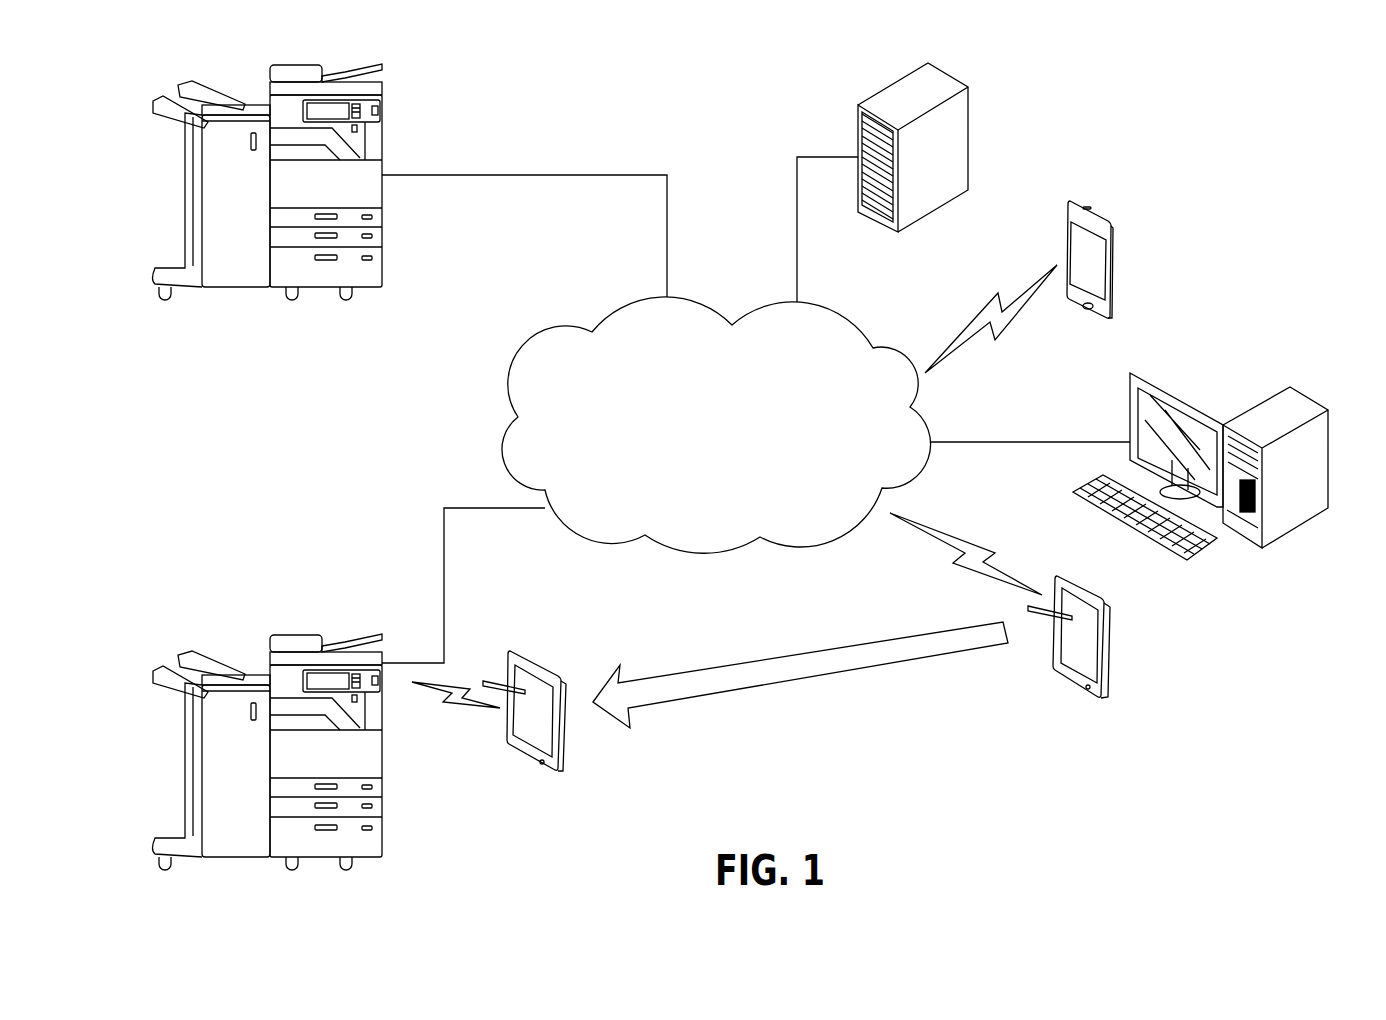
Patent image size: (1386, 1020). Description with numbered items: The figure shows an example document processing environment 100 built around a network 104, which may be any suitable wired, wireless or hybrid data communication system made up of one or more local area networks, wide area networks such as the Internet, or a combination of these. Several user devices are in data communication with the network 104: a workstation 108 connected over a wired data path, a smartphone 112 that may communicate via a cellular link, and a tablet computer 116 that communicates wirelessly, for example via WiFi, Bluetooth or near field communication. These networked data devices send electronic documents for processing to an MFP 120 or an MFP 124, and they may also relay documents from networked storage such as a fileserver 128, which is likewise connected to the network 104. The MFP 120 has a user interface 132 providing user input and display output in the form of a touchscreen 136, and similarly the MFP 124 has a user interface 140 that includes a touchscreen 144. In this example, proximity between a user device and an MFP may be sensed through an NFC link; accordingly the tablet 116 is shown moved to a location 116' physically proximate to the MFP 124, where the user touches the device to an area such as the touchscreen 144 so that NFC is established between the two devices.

The document processing environment 100 is at (1205, 160).
The network 104 is at (912, 405).
The workstation 108 is at (1328, 430).
The smartphone 112 is at (1110, 268).
The tablet computer 116 is at (1110, 637).
The location of tablet 116' is at (566, 715).
The MFP 120 is at (319, 182).
The MFP 124 is at (317, 752).
The fileserver 128 is at (968, 140).
The user interface 132 is at (386, 101).
The touchscreen 136 is at (337, 110).
The user interface 140 is at (386, 683).
The touchscreen 144 is at (330, 677).